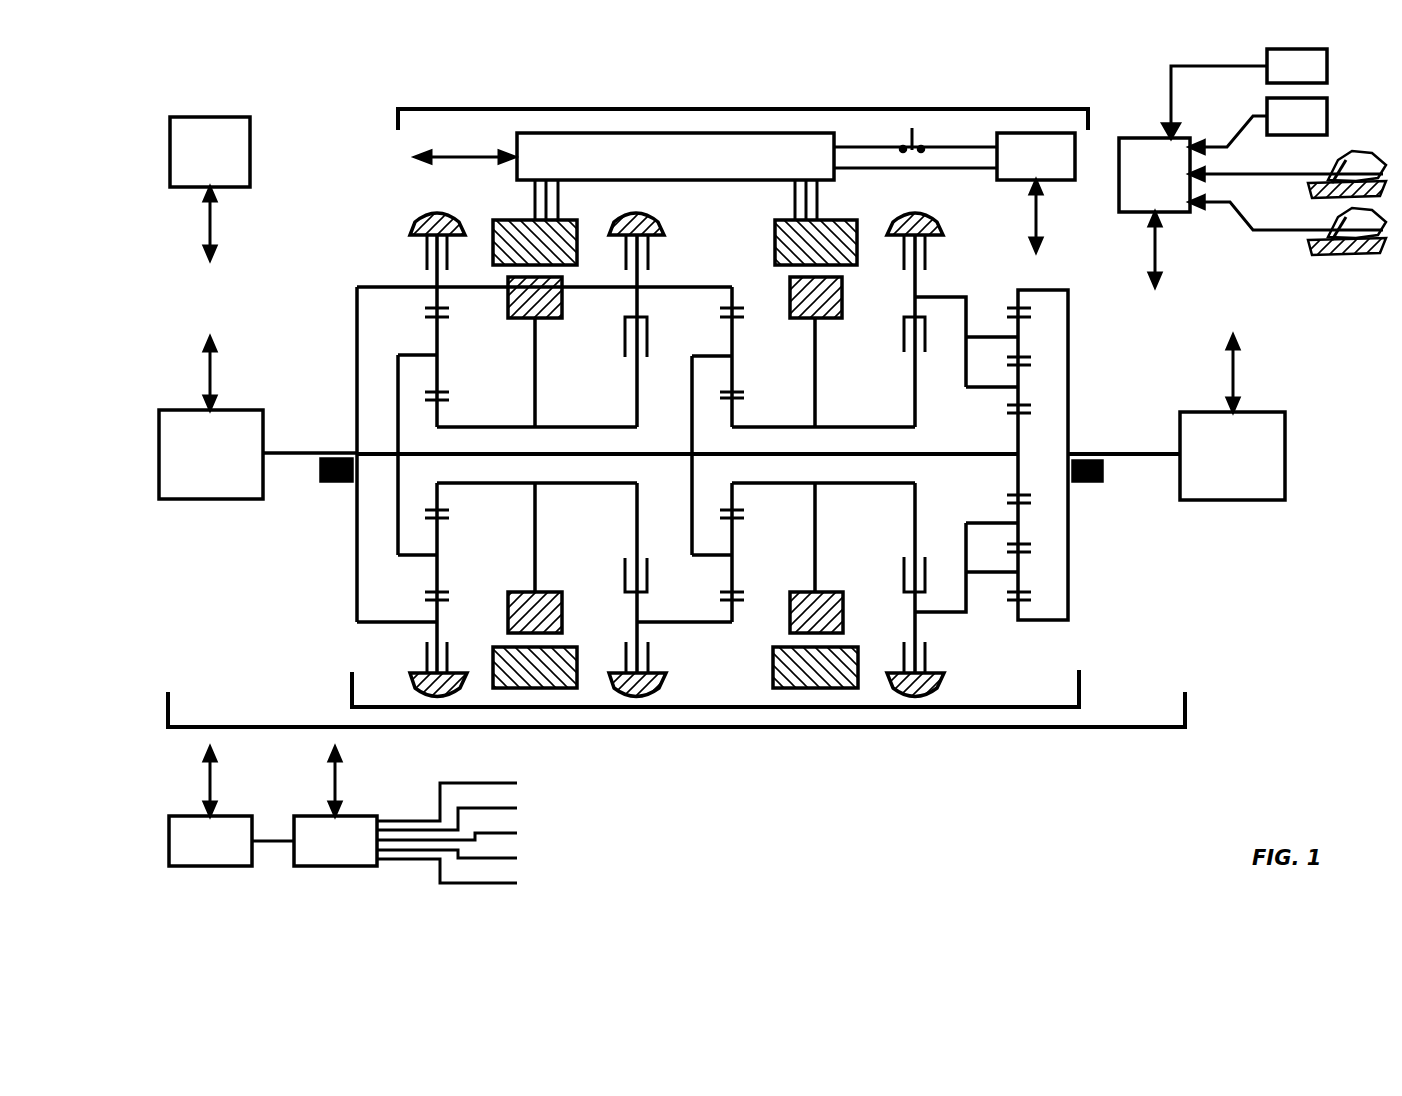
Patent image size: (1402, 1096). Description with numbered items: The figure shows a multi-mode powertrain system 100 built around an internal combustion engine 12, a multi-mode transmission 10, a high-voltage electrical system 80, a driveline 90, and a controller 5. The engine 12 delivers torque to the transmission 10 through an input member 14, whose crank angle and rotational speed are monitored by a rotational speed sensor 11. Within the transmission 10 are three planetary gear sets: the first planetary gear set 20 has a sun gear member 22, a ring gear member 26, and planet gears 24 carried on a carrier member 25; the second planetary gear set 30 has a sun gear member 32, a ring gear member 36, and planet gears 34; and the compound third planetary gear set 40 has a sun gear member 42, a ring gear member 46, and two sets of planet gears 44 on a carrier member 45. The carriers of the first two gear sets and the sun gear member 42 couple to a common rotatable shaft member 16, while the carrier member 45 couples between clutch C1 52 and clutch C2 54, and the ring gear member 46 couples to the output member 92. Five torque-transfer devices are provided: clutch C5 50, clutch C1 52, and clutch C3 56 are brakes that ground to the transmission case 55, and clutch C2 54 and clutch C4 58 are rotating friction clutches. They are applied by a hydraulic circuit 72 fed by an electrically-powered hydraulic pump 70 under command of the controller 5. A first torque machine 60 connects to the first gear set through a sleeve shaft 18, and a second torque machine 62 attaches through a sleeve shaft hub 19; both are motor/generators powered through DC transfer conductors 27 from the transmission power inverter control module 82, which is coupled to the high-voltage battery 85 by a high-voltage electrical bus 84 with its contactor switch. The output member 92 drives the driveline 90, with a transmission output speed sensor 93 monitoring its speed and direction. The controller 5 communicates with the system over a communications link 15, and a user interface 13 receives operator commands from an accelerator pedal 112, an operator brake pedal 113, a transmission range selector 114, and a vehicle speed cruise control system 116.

The controller 5 is at (210, 152).
The multi-mode transmission 10 is at (848, 707).
The rotational speed sensor 11 is at (337, 481).
The internal combustion engine 12 is at (211, 454).
The user interface 13 is at (1154, 175).
The input member 14 is at (300, 458).
The communications link 15 is at (707, 472).
The rotatable shaft member 16 is at (648, 450).
The sleeve shaft 18 is at (585, 427).
The sleeve shaft hub 19 is at (865, 427).
The first planetary gear set 20 is at (452, 497).
The sun gear member 22 is at (437, 400).
The planet gears 24 is at (437, 355).
The carrier member 25 is at (400, 425).
The ring gear member 26 is at (437, 312).
The DC transfer conductors 27 is at (558, 205).
The second planetary gear set 30 is at (735, 553).
The sun gear member 32 is at (735, 400).
The planet gears 34 is at (732, 356).
The ring gear member 36 is at (732, 312).
The third planetary gear set 40 is at (1010, 444).
The sun gear member 42 is at (1020, 493).
The planet gears 44 is at (1020, 523).
The carrier member 45 is at (968, 312).
The ring gear member 46 is at (1017, 605).
The clutch C5 50 is at (427, 255).
The clutch C1 52 is at (925, 257).
The clutch C2 54 is at (904, 335).
The transmission case 55 is at (437, 222).
The clutch C3 56 is at (650, 255).
The clutch C4 58 is at (625, 335).
The first torque machine 60 is at (560, 265).
The second torque machine 62 is at (840, 265).
The electrically-powered hydraulic pump 70 is at (231, 841).
The hydraulic circuit 72 is at (421, 834).
The high-voltage electrical system 80 is at (752, 109).
The transmission power inverter control module 82 is at (675, 156).
The high-voltage electrical bus 84 is at (950, 146).
The high-voltage battery 85 is at (954, 156).
The driveline 90 is at (1232, 456).
The output member 92 is at (1130, 450).
The transmission output speed sensor 93 is at (1102, 472).
The powertrain system 100 is at (752, 727).
The accelerator pedal 112 is at (1330, 228).
The operator brake pedal 113 is at (1332, 172).
The transmission range selector 114 is at (1258, 125).
The vehicle speed cruise control system 116 is at (1245, 93).